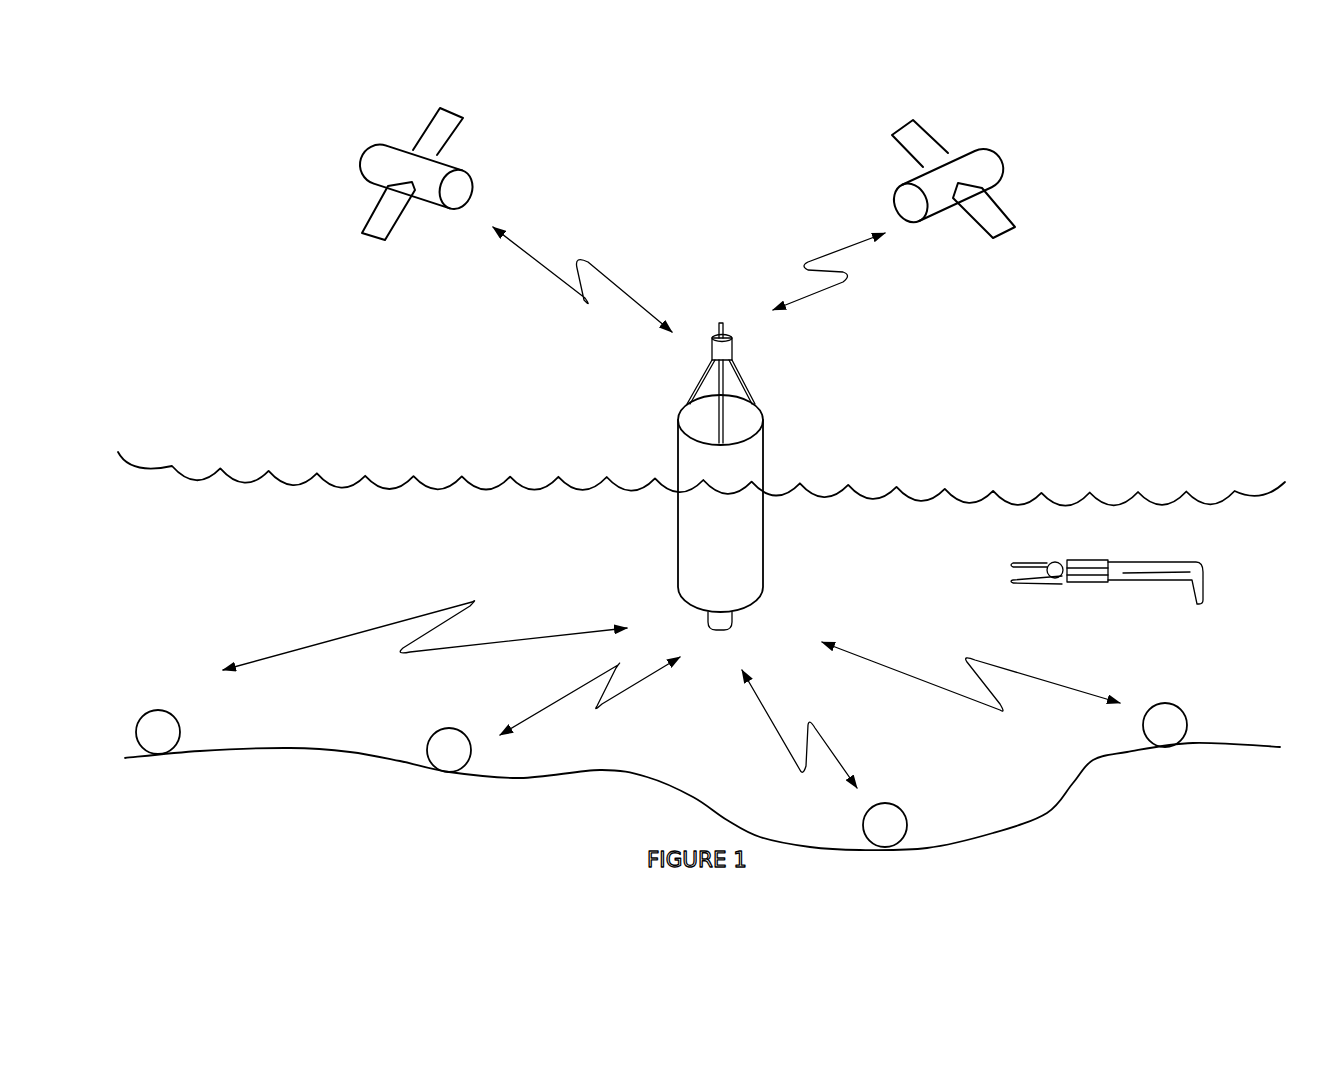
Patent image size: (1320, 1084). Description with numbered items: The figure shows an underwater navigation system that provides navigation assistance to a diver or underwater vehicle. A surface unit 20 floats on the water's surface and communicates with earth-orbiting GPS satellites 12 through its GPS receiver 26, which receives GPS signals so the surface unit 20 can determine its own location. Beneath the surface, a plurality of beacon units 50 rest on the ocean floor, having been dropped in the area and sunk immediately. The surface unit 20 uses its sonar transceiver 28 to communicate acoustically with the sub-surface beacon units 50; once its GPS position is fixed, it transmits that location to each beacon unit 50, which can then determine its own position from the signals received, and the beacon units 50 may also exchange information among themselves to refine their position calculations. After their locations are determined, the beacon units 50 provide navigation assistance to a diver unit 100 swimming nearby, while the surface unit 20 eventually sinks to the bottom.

The GPS satellites 12 is at (475, 178).
The surface unit 20 is at (663, 413).
The GPS receiver 26 is at (732, 353).
The sonar transceiver 28 is at (732, 618).
The beacon units 50 is at (158, 709).
The diver unit 100 is at (1023, 565).